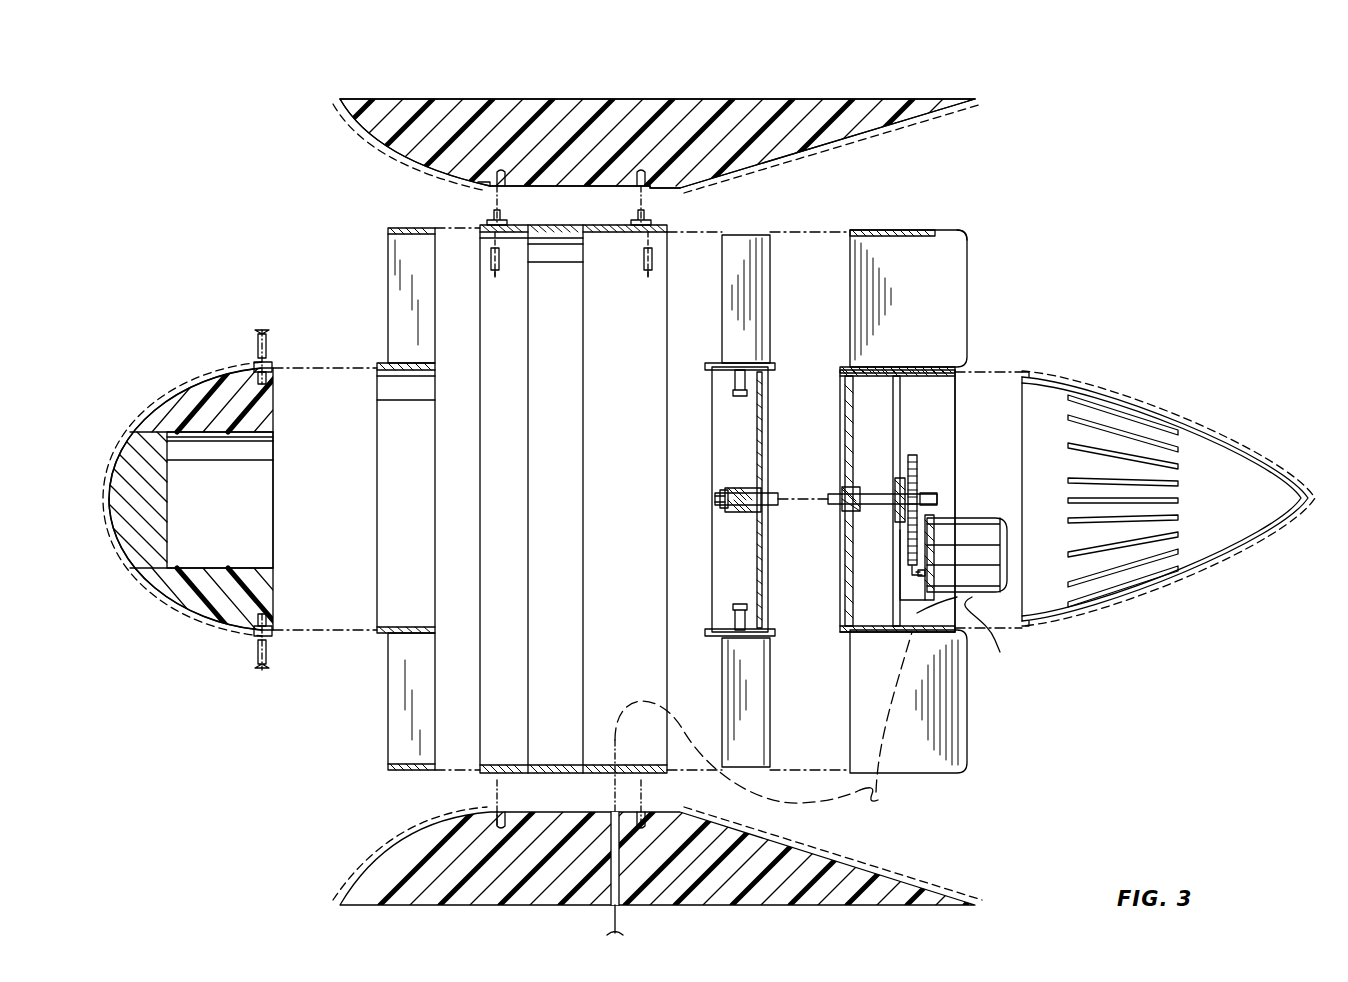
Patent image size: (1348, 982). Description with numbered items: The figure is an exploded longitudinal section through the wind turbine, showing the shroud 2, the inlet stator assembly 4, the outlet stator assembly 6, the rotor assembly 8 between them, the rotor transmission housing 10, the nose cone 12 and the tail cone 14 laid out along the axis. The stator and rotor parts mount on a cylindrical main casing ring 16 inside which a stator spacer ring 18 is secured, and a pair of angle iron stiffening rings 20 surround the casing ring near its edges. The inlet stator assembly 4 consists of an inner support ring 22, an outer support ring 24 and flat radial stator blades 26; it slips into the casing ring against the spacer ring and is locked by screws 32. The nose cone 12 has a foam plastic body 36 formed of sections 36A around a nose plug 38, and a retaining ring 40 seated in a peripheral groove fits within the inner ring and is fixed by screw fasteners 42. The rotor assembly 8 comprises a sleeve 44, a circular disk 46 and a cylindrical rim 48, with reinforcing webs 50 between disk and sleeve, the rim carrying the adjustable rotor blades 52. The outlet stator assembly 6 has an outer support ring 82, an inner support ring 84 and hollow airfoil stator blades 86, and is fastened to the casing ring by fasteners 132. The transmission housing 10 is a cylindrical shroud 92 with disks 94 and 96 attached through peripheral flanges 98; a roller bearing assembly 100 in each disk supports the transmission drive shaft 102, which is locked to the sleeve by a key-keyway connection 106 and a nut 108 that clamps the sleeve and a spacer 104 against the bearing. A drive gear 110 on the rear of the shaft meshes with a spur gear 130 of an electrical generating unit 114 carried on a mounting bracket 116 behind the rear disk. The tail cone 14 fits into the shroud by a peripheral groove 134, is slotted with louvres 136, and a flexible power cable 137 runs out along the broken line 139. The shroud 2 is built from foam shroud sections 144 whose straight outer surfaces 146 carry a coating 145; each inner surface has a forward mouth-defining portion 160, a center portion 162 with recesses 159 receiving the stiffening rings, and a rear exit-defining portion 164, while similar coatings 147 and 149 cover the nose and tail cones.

The shroud 2 is at (372, 145).
The inlet stator assembly 4 is at (385, 268).
The outlet stator assembly 6 is at (975, 262).
The rotor assembly 8 is at (773, 252).
The rotor transmission housing 10 is at (958, 412).
The nose cone 12 is at (150, 405).
The tail cone 14 is at (1275, 455).
The main casing ring 16 is at (520, 780).
The stator spacer ring 18 is at (588, 385).
The stiffening rings 20 is at (503, 218).
The inner stator blade support ring 22 is at (385, 375).
The outer stator blade support ring 24 is at (390, 240).
The stator blades 26 is at (410, 285).
The screws 32 is at (495, 282).
The plastic body 36 is at (165, 585).
The sections 36A is at (220, 410).
The nose plug 38 is at (113, 470).
The retaining ring 40 is at (268, 362).
The screw fasteners 42 is at (262, 328).
The sleeve 44 is at (755, 510).
The circular disk 46 is at (752, 404).
The cylindrical rim 48 is at (722, 382).
The reinforcing webs 50 is at (742, 485).
The rotor blades 52 is at (750, 290).
The outer support ring 82 is at (888, 230).
The inner support ring 84 is at (950, 365).
The stator blades 86 is at (950, 232).
The cylindrical shroud 92 is at (845, 372).
The disk 94 is at (848, 380).
The disk 96 is at (898, 420).
The peripheral flanges 98 is at (852, 620).
The roller bearing assembly 100 is at (895, 485).
The transmission drive shaft 102 is at (858, 510).
The spacer 104 is at (838, 488).
The key-keyway connection 106 is at (730, 490).
The nut 108 is at (722, 510).
The drive gear 110 is at (918, 463).
The electrical generating unit 114 is at (968, 520).
The generator unit mounting bracket 116 is at (920, 575).
The spur gear 130 is at (935, 588).
The fasteners 132 is at (648, 282).
The peripheral groove 134 is at (1035, 378).
The louvres 136 is at (1140, 415).
The flexible power cable 137 is at (977, 637).
The broken line 139 is at (835, 805).
The shroud sections 144 is at (388, 112).
The coating 145 is at (790, 158).
The outer surfaces 146 is at (437, 99).
The coating 147 is at (118, 548).
The coating 149 is at (1238, 430).
The recesses 159 is at (648, 190).
The forward mouth-defining portion 160 is at (415, 172).
The center portion 162 is at (577, 188).
The rear exit-defining portion 164 is at (860, 135).